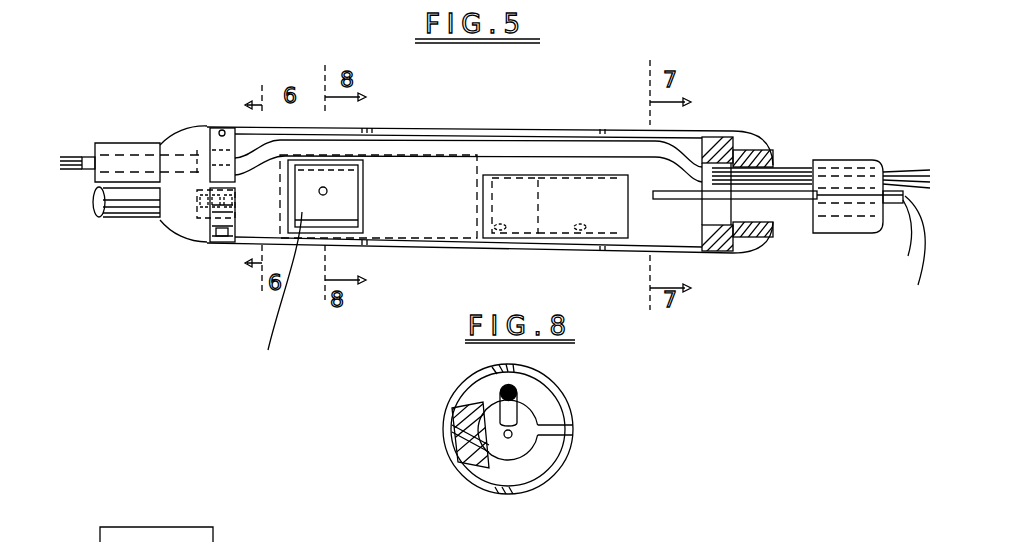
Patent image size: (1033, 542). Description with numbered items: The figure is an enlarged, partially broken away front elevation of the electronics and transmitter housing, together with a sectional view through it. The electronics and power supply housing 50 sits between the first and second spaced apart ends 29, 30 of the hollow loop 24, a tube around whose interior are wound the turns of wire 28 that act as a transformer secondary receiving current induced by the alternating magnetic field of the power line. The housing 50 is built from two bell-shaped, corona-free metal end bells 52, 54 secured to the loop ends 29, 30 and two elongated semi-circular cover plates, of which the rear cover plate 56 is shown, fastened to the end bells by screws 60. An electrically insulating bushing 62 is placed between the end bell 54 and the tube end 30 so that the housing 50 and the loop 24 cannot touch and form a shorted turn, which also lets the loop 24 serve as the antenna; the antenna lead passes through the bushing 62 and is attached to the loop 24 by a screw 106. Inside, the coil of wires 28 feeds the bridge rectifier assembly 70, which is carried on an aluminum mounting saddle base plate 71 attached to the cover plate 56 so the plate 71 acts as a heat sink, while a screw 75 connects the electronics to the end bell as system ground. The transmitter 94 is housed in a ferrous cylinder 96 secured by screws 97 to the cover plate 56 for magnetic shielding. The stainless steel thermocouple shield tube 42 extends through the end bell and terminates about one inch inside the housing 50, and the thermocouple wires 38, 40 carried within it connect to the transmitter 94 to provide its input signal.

In FIG. 5, the hollow loop 24 is at (125, 143).
In FIG. 5, the turns of wire 28 is at (417, 148).
In FIG. 8, the turns of wire 28 is at (520, 393).
In FIG. 5, the first end of the tube 29 is at (187, 217).
In FIG. 5, the second end of the tube 30 is at (762, 163).
In FIG. 5, the thermocouple wire 38 is at (904, 256).
In FIG. 5, the thermocouple wire 40 is at (906, 233).
In FIG. 5, the stainless steel tube or shield 42 is at (677, 198).
In FIG. 8, the stainless steel tube or shield 42 is at (511, 437).
In FIG. 5, the electronics and power supply housing 50 is at (550, 100).
In FIG. 5, the end bell 52 is at (172, 142).
In FIG. 5, the end bell 54 is at (740, 152).
In FIG. 8, the end bell 54 is at (568, 410).
In FIG. 5, the cover plate 56 is at (580, 132).
In FIG. 8, the cover plate 56 is at (460, 467).
In FIG. 5, the screws 60 is at (224, 130).
In FIG. 5, the electrically insulating bushing 62 is at (735, 240).
In FIG. 5, the bridge rectifier assembly 70 is at (356, 278).
In FIG. 8, the bridge rectifier assembly 70 is at (487, 463).
In FIG. 8, the mounting saddle base plate 71 is at (447, 427).
In FIG. 5, the screw 75 is at (237, 200).
In FIG. 5, the transmitter 94 is at (445, 325).
In FIG. 5, the ferrous cylinder 96 is at (580, 237).
In FIG. 5, the screws 97 is at (515, 235).
In FIG. 5, the screw 106 is at (780, 222).